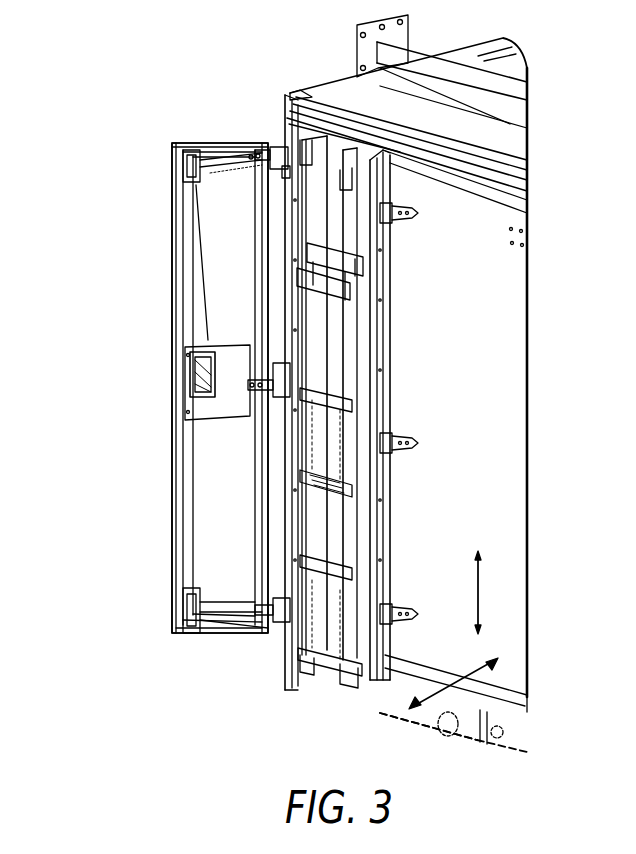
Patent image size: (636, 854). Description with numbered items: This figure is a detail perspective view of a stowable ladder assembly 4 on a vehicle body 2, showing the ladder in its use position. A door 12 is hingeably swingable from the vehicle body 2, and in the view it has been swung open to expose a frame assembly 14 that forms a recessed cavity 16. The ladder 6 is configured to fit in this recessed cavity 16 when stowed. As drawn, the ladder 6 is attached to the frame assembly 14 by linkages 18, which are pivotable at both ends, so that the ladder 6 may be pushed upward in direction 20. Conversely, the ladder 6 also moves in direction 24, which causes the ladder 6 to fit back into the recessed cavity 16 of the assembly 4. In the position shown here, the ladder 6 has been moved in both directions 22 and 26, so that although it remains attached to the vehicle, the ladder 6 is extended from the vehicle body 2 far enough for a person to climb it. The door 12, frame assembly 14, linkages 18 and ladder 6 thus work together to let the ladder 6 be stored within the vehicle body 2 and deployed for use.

The vehicle body 2 is at (563, 117).
The stowable ladder assembly 4 is at (134, 234).
The ladder 6 is at (292, 636).
The door 12 is at (210, 490).
The frame assembly 14 is at (305, 140).
The recessed cavity 16 is at (343, 172).
The linkages 18 is at (325, 352).
The direction 20 is at (478, 553).
The direction 22 is at (478, 632).
The direction 24 is at (496, 662).
The direction 26 is at (412, 709).